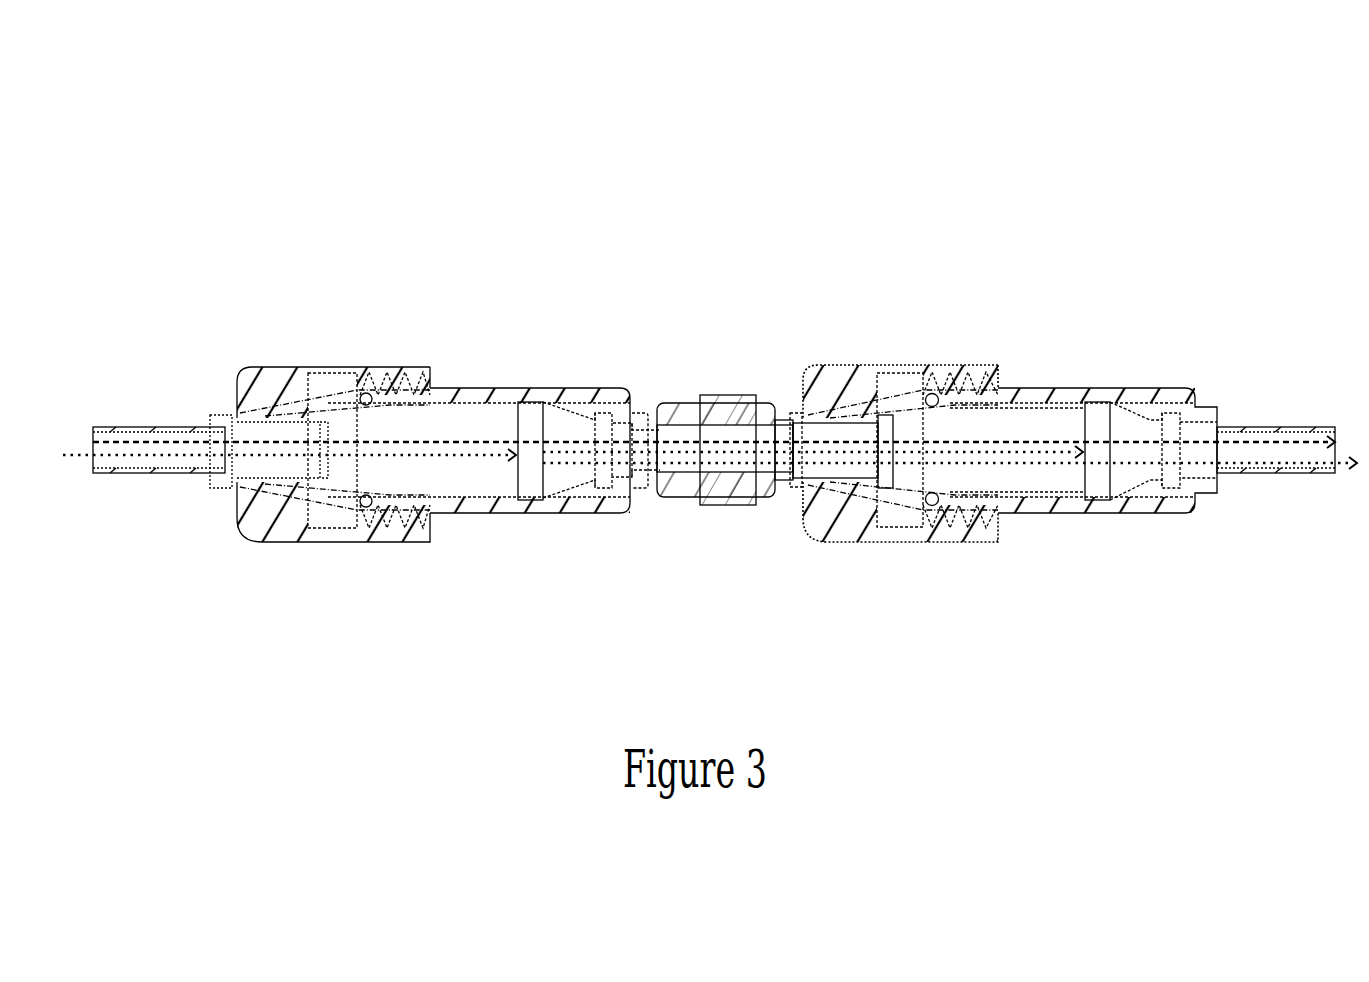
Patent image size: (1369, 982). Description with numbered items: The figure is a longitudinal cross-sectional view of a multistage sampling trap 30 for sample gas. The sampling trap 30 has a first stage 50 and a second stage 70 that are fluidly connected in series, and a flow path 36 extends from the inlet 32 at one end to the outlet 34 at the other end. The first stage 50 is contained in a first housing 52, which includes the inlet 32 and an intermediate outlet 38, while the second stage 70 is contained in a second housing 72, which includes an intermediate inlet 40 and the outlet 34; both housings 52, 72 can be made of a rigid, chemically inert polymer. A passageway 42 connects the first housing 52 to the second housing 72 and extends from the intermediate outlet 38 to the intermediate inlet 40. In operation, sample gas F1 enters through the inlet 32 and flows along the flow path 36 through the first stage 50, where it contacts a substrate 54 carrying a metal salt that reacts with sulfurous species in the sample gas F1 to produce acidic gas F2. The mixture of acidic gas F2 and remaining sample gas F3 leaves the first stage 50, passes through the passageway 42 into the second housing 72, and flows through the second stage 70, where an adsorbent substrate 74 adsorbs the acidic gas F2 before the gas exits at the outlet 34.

The sampling trap 30 is at (240, 153).
The inlet 32 is at (92, 448).
The outlet 34 is at (1338, 451).
The flow path 36 is at (158, 442).
The intermediate outlet 38 is at (658, 438).
The intermediate inlet 40 is at (772, 438).
The passageway 42 is at (711, 435).
The first stage 50 is at (667, 338).
The first housing 52 is at (238, 368).
The substrate 54 is at (539, 493).
The second stage 70 is at (780, 338).
The second housing 72 is at (930, 366).
The adsorbent substrate 74 is at (1108, 497).
The sample gas F1 is at (70, 460).
The acidic gas F2 is at (554, 455).
The remaining sample gas F3 is at (677, 464).